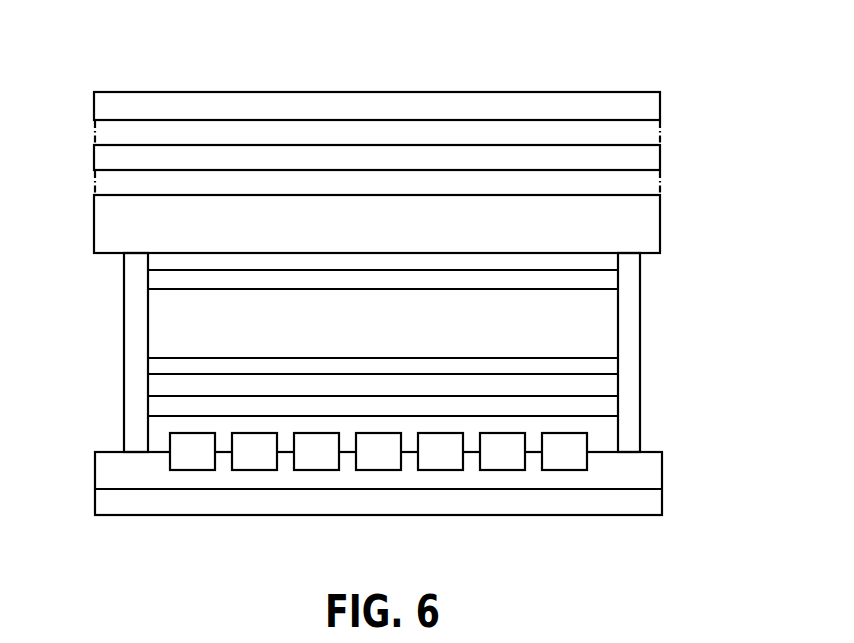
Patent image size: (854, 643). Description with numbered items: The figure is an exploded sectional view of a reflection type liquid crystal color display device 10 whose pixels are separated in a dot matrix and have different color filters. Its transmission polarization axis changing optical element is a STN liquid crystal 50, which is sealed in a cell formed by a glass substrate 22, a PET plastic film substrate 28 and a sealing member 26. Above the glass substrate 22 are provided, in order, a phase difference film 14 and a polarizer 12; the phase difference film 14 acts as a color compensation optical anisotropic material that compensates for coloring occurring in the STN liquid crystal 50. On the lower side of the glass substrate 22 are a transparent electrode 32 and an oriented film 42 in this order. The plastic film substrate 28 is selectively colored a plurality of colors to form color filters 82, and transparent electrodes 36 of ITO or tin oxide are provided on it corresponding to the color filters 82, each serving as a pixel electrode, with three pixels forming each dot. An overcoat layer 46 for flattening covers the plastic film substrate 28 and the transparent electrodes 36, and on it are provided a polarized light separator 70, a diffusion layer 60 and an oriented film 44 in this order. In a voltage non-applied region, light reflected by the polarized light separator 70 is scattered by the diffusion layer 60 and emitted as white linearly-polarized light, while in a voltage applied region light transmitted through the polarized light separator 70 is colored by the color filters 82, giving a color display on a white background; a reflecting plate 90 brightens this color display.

The liquid crystal display device 10 is at (565, 85).
The polarizer 12 is at (645, 107).
The phase difference film 14 is at (647, 160).
The glass substrate 22 is at (645, 227).
The sealing member 26 is at (630, 329).
The plastic film substrate 28 is at (650, 476).
The transparent electrode 32 is at (608, 263).
The transparent electrodes 36 is at (580, 446).
The oriented film 42 is at (608, 282).
The oriented film 44 is at (610, 366).
The overcoat layer 46 is at (607, 430).
The STN liquid crystal 50 is at (165, 317).
The diffusion layer 60 is at (610, 385).
The polarized light separator 70 is at (610, 402).
The color filters 82 is at (567, 460).
The reflecting plate 90 is at (650, 503).